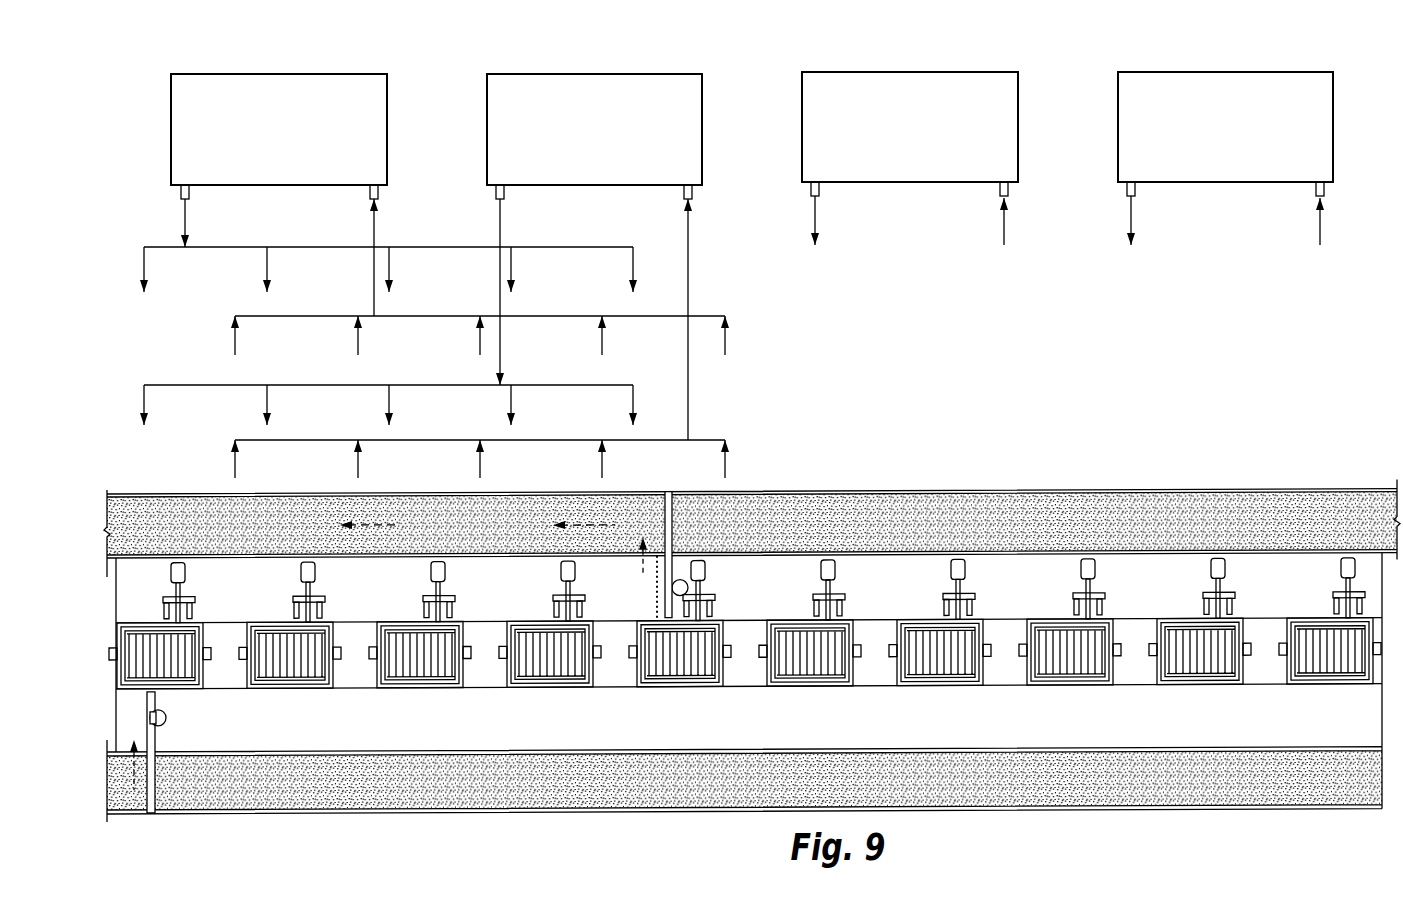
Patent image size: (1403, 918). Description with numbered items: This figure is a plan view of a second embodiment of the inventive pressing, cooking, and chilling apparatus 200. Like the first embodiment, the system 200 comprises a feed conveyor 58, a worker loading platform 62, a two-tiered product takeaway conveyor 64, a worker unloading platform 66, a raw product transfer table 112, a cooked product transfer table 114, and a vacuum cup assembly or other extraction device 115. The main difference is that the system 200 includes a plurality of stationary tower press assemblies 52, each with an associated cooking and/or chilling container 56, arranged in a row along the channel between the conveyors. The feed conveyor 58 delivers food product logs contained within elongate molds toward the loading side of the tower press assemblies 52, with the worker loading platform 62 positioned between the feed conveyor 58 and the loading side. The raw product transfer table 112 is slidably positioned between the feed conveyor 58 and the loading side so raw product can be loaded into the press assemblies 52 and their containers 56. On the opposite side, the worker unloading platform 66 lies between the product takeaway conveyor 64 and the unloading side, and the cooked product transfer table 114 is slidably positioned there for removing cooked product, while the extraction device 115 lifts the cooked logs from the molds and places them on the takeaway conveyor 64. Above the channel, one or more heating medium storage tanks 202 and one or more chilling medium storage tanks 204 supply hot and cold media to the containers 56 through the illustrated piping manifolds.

The tower press assembly 52 is at (1308, 675).
The container 56 is at (1366, 706).
The feed conveyor 58 is at (482, 797).
The worker loading platform 62 is at (308, 735).
The product takeaway conveyor 64 is at (913, 520).
The worker unloading platform 66 is at (790, 585).
The raw product transfer table 112 is at (153, 747).
The cooked product transfer table 114 is at (668, 560).
The vacuum cup assembly 115 is at (655, 578).
The pressing, cooking, and chilling apparatus 200 is at (1218, 813).
The heating medium storage tank 202 is at (295, 186).
The chilling medium storage tank 204 is at (615, 186).